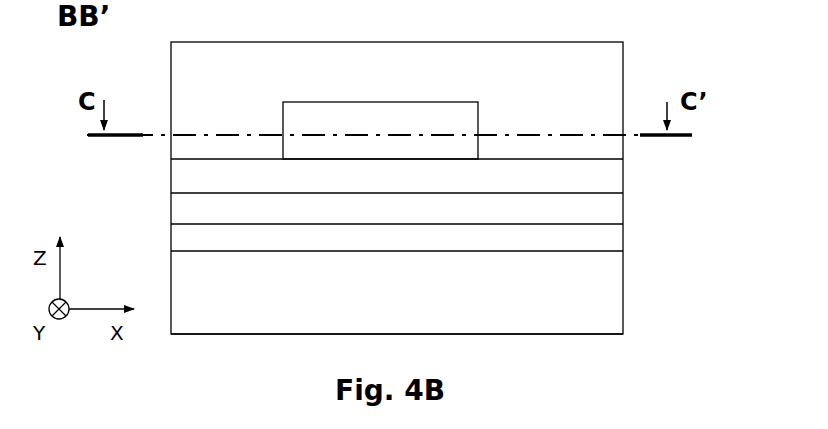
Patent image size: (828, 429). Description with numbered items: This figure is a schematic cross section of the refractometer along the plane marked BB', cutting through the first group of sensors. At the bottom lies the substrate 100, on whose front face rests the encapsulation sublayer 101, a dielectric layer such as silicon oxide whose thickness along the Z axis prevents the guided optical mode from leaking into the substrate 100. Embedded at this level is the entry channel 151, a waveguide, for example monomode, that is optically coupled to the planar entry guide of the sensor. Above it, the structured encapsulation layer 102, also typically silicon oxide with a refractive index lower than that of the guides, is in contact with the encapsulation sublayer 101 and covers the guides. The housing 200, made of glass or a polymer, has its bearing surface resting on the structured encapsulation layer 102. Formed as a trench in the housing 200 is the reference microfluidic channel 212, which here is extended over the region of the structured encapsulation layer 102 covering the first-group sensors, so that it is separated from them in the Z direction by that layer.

The housing 200 is at (594, 65).
The reference microfluidic channel 212 is at (302, 121).
The structured encapsulation layer 102 is at (603, 177).
The entry channel 151 is at (214, 211).
The encapsulation sublayer 101 is at (603, 242).
The substrate 100 is at (604, 319).